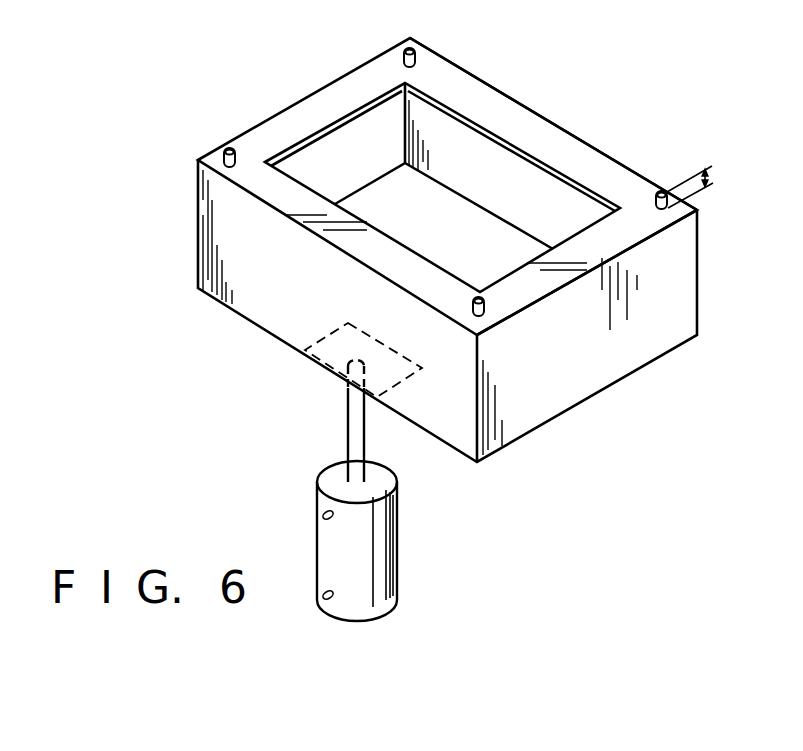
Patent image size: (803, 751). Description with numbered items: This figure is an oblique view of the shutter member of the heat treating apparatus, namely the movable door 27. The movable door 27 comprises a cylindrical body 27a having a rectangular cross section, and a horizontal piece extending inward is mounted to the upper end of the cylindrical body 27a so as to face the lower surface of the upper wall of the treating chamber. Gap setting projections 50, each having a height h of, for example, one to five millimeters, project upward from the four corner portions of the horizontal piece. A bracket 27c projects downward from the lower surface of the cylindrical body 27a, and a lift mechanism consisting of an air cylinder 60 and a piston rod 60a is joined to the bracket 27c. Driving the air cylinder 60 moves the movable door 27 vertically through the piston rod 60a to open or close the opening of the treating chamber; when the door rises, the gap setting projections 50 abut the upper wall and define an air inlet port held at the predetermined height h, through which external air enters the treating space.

The movable door 27 is at (581, 136).
The cylindrical body 27a is at (463, 95).
The bracket 27c is at (323, 364).
The gap setting projections 50 is at (415, 48).
The air cylinder 60 is at (378, 535).
The piston rod 60a is at (348, 399).
The height of gap setting projections h is at (698, 182).